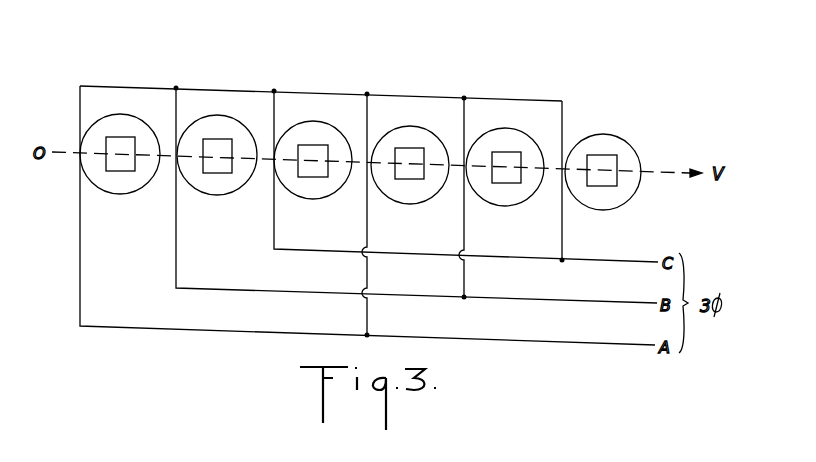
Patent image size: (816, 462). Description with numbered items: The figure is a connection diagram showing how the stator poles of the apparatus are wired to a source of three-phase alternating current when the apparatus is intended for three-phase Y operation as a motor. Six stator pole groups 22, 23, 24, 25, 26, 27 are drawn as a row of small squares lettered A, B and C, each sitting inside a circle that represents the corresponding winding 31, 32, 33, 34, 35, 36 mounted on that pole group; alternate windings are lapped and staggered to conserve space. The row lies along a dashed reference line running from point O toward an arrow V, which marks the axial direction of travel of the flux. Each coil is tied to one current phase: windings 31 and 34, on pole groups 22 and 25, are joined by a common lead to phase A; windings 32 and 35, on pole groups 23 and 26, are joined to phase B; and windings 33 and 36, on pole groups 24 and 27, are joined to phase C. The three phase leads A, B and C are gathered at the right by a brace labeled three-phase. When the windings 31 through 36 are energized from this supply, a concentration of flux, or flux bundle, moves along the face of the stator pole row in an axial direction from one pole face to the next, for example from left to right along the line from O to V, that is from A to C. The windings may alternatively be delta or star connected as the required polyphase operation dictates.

The stator pole group 22 is at (117, 140).
The stator pole group 23 is at (212, 142).
The stator pole group 24 is at (305, 145).
The stator pole group 25 is at (403, 148).
The stator pole group 26 is at (498, 152).
The stator pole group 27 is at (598, 155).
The winding 31 is at (128, 122).
The winding 32 is at (228, 127).
The winding 33 is at (325, 130).
The winding 34 is at (418, 135).
The winding 35 is at (520, 130).
The winding 36 is at (612, 137).